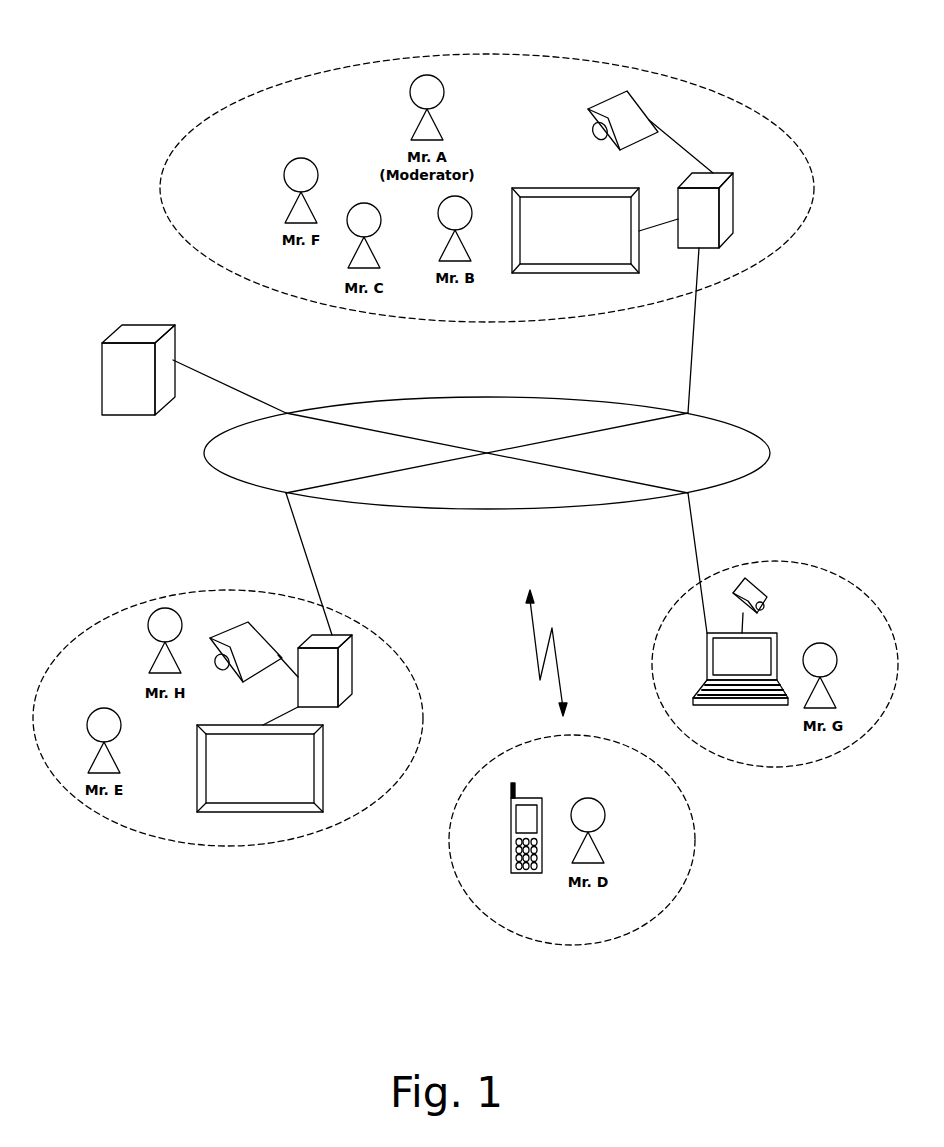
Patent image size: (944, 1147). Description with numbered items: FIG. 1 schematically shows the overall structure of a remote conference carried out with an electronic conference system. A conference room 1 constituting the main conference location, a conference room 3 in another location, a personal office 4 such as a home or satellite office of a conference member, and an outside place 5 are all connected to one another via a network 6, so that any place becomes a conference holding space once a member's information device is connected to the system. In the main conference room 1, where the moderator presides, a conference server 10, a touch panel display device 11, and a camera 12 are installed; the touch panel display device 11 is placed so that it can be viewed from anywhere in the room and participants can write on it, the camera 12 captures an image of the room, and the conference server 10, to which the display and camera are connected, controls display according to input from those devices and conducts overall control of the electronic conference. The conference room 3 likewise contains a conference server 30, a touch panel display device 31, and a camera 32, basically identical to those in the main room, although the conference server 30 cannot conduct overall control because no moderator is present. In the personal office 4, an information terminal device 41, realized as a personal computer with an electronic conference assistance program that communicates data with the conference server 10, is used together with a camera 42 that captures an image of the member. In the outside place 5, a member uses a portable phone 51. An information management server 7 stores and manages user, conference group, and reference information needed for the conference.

The conference room 1 is at (353, 63).
The camera 12 is at (610, 90).
The conference server 10 is at (733, 215).
The touch panel display device 11 is at (593, 273).
The information management server 7 is at (133, 325).
The network 6 is at (760, 438).
The conference room 3 is at (97, 618).
The camera 32 is at (227, 623).
The conference server 30 is at (352, 660).
The touch panel display device 31 is at (283, 812).
The personal office 4 is at (837, 570).
The camera 42 is at (745, 578).
The information terminal device 41 is at (707, 683).
The outside place 5 is at (695, 860).
The portable phone 51 is at (511, 852).